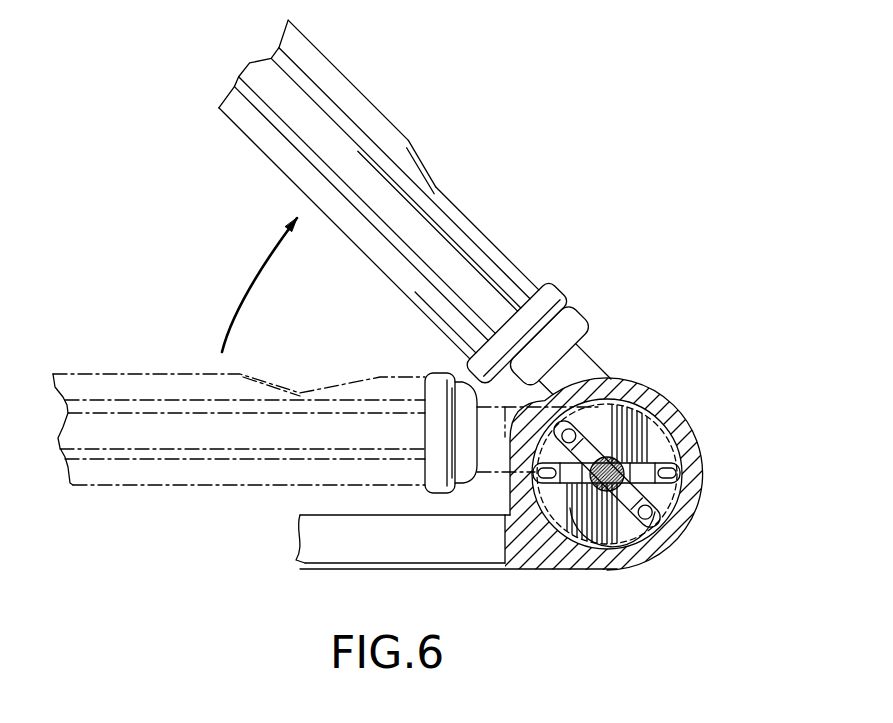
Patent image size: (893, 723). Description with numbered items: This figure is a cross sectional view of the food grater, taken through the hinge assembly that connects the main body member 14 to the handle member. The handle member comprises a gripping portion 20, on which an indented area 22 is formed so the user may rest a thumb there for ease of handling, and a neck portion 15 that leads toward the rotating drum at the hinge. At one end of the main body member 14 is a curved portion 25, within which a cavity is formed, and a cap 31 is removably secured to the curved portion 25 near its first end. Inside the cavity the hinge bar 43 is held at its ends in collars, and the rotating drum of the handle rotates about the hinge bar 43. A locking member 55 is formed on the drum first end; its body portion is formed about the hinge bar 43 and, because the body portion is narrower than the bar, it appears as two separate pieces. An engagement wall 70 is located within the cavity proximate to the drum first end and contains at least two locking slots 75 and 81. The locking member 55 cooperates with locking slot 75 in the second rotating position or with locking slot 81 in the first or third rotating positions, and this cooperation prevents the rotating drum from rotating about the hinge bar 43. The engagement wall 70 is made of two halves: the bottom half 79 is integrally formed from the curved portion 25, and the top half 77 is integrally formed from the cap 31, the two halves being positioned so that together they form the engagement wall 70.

The main body member 14 is at (303, 563).
The gripping portion 20 is at (324, 87).
The indented area 22 is at (440, 207).
The neck portion 15 is at (608, 378).
The curved portion 25 is at (657, 540).
The cap 31 is at (677, 417).
The top half of engagement wall 77 is at (632, 396).
The engagement wall 70 is at (643, 442).
The hinge bar 43 is at (582, 545).
The locking slot 81 is at (680, 474).
The locking slot 75 is at (684, 540).
The locking member 55 is at (683, 540).
The bottom half of engagement wall 79 is at (610, 530).